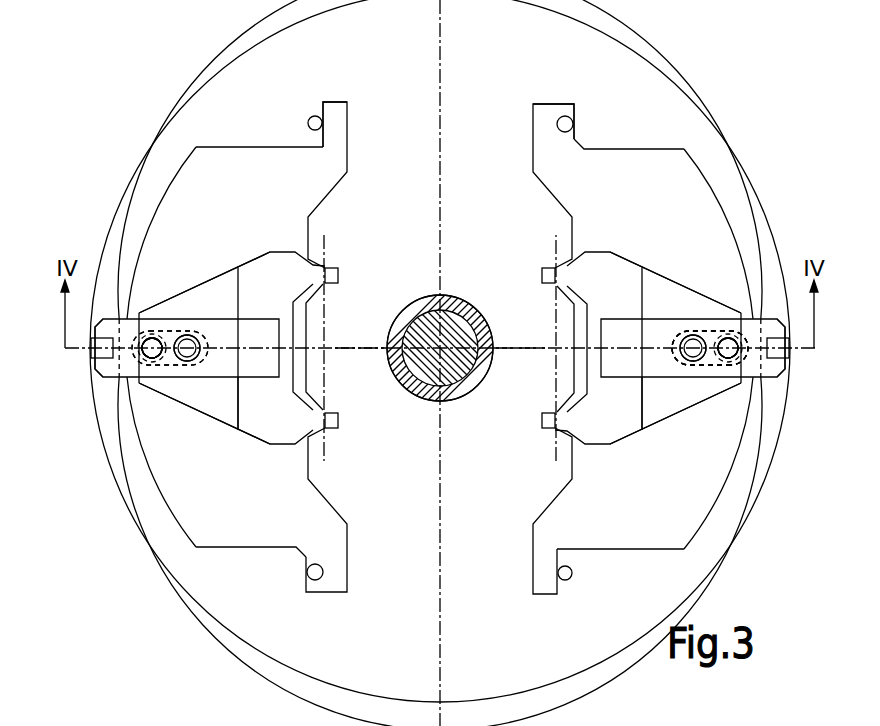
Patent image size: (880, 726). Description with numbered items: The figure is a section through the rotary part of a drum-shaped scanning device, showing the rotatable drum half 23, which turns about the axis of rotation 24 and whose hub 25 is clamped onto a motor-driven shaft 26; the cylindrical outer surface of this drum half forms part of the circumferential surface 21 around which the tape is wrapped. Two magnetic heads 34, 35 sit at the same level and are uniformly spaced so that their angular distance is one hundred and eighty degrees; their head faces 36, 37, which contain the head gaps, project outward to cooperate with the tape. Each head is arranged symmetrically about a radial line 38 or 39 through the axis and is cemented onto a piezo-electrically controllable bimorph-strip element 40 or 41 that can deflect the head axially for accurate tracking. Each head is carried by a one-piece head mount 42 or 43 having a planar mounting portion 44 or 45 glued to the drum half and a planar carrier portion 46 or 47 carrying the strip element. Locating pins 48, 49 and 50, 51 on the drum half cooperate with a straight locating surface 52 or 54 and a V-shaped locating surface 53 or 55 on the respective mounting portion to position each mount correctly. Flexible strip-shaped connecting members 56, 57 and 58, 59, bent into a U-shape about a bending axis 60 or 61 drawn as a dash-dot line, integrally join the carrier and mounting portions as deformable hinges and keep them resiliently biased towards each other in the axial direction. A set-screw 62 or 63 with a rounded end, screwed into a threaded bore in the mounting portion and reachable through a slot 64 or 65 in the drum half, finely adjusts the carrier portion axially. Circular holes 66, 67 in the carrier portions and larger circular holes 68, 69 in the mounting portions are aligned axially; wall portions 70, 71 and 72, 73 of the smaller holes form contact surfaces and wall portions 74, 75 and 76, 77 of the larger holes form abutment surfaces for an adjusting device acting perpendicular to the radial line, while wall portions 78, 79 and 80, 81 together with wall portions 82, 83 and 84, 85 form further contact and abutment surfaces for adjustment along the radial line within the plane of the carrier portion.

The circumferential surface 21 is at (140, 535).
The rotatable drum half 23 is at (256, 60).
The axis of rotation 24 is at (432, 378).
The hub 25 is at (452, 395).
The shaft 26 is at (428, 305).
The magnetic head 34 is at (99, 373).
The magnetic head 35 is at (782, 373).
The head face 36 is at (95, 356).
The head face 37 is at (786, 356).
The radial line 38 is at (360, 345).
The radial line 39 is at (517, 345).
The bimorph-strip element 40 is at (275, 318).
The bimorph-strip element 41 is at (605, 318).
The head mount 42 is at (360, 145).
The head mount 43 is at (520, 145).
The mounting portion 44 is at (232, 158).
The mounting portion 45 is at (605, 160).
The carrier portion 46 is at (265, 272).
The carrier portion 47 is at (632, 265).
The locating pin 48 is at (311, 118).
The locating pin 49 is at (310, 576).
The locating pin 50 is at (575, 571).
The locating pin 51 is at (573, 124).
The locating surface 52 is at (327, 100).
The locating surface 53 is at (300, 552).
The locating surface 54 is at (563, 582).
The locating surface 55 is at (572, 110).
The connecting member 56 is at (339, 276).
The connecting member 57 is at (339, 420).
The connecting member 58 is at (541, 420).
The connecting member 59 is at (541, 276).
The bending axis 60 is at (327, 240).
The bending axis 61 is at (553, 240).
The set-screw 62 is at (238, 376).
The set-screw 63 is at (642, 378).
The slot 64 is at (272, 330).
The slot 65 is at (660, 338).
The circular hole 66 is at (149, 360).
The circular hole 67 is at (722, 360).
The circular hole 68 is at (140, 331).
The circular hole 69 is at (740, 331).
The contact surface 70 is at (152, 338).
The contact surface 71 is at (156, 357).
The contact surface 72 is at (729, 358).
The contact surface 73 is at (722, 338).
The abutment surface 74 is at (158, 338).
The abutment surface 75 is at (150, 358).
The abutment surface 76 is at (724, 358).
The abutment surface 77 is at (728, 338).
The further contact surface 78 is at (146, 354).
The further contact surface 79 is at (192, 336).
The further contact surface 80 is at (742, 342).
The further contact surface 81 is at (691, 361).
The further abutment surface 82 is at (140, 345).
The further abutment surface 83 is at (189, 361).
The further abutment surface 84 is at (740, 357).
The further abutment surface 85 is at (690, 336).